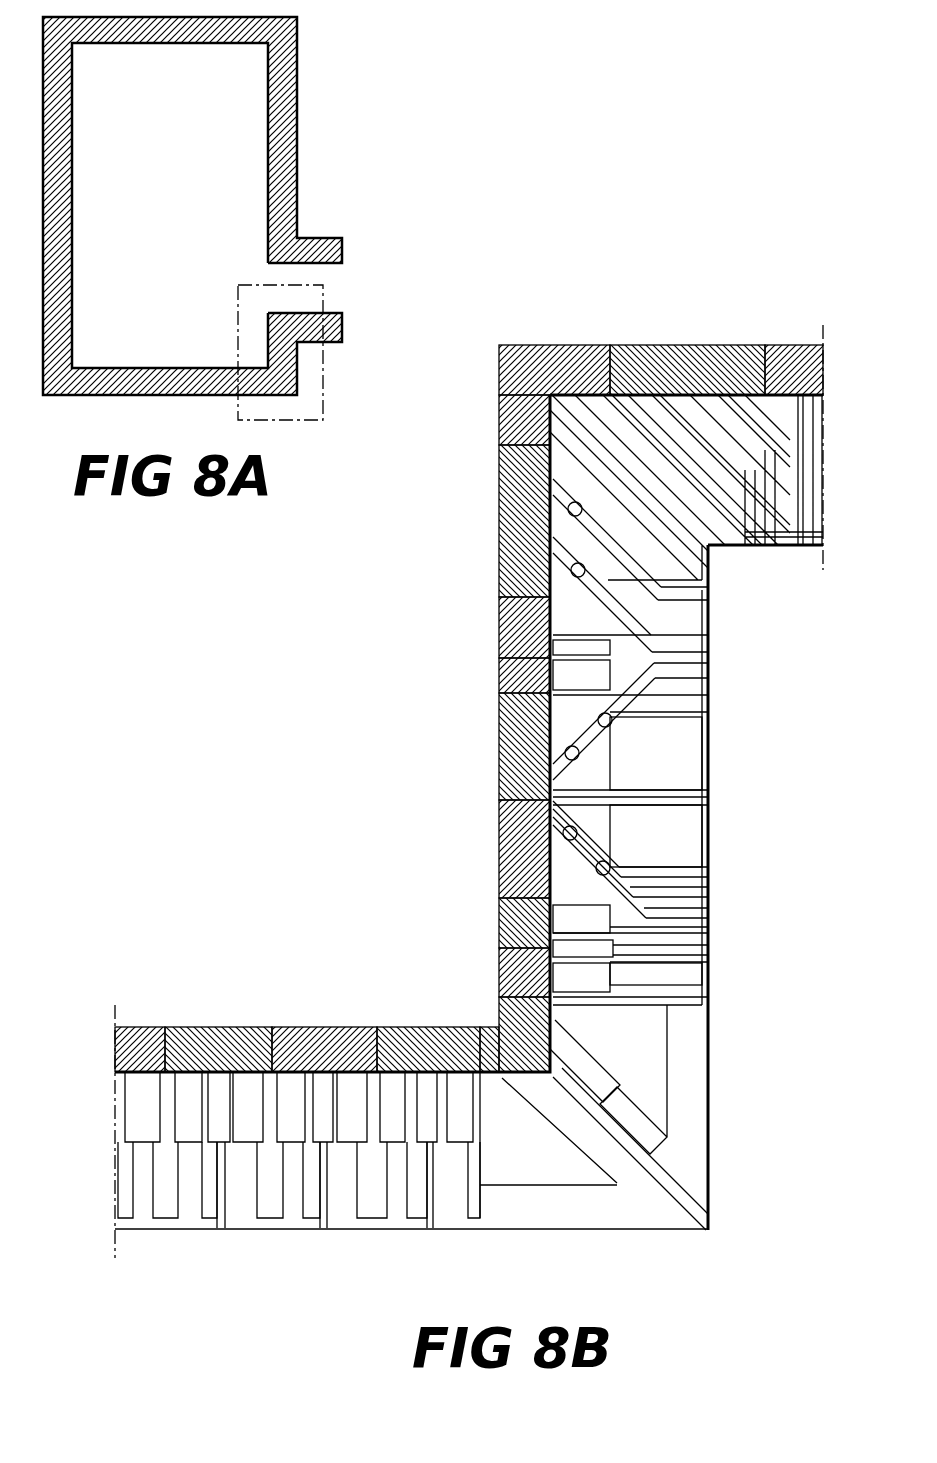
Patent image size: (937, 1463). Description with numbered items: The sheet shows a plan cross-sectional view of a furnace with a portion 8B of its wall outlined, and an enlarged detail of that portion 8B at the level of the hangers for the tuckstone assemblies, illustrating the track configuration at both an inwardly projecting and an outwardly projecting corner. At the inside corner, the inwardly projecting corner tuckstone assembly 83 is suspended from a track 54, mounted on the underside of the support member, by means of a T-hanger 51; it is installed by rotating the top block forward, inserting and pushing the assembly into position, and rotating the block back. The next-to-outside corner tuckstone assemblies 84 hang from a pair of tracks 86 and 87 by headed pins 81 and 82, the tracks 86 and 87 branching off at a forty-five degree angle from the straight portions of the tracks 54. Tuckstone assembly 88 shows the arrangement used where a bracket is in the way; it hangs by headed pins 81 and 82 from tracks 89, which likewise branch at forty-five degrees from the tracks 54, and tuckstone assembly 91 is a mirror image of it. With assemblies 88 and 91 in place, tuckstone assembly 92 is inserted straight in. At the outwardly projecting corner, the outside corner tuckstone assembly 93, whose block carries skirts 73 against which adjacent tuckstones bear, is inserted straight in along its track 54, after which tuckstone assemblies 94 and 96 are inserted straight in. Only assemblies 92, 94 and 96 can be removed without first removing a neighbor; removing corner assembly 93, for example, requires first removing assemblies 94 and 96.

In FIG. 8A, the portion 8B is at (238, 285).
In FIG. 8B, the T-hanger 51 is at (565, 405).
In FIG. 8B, the track 54 is at (712, 548).
In FIG. 8B, the skirts 73 is at (658, 1050).
In FIG. 8B, the headed pin 81 is at (568, 510).
In FIG. 8B, the headed pin 82 is at (578, 578).
In FIG. 8B, the inwardly projecting corner tuckstone assembly 83 is at (513, 345).
In FIG. 8B, the next-to-outside corner tuckstone assembly 84 is at (690, 345).
In FIG. 8B, the track 86 is at (645, 572).
In FIG. 8B, the track 87 is at (650, 625).
In FIG. 8B, the tuckstone assembly 88 is at (505, 755).
In FIG. 8B, the tracks 89 is at (595, 737).
In FIG. 8B, the tuckstone assembly 91 is at (500, 843).
In FIG. 8B, the tuckstone assembly 92 is at (500, 615).
In FIG. 8B, the outside corner tuckstone assembly 93 is at (490, 1027).
In FIG. 8B, the tuckstone assembly 94 is at (500, 905).
In FIG. 8B, the tuckstone assembly 96 is at (422, 1027).